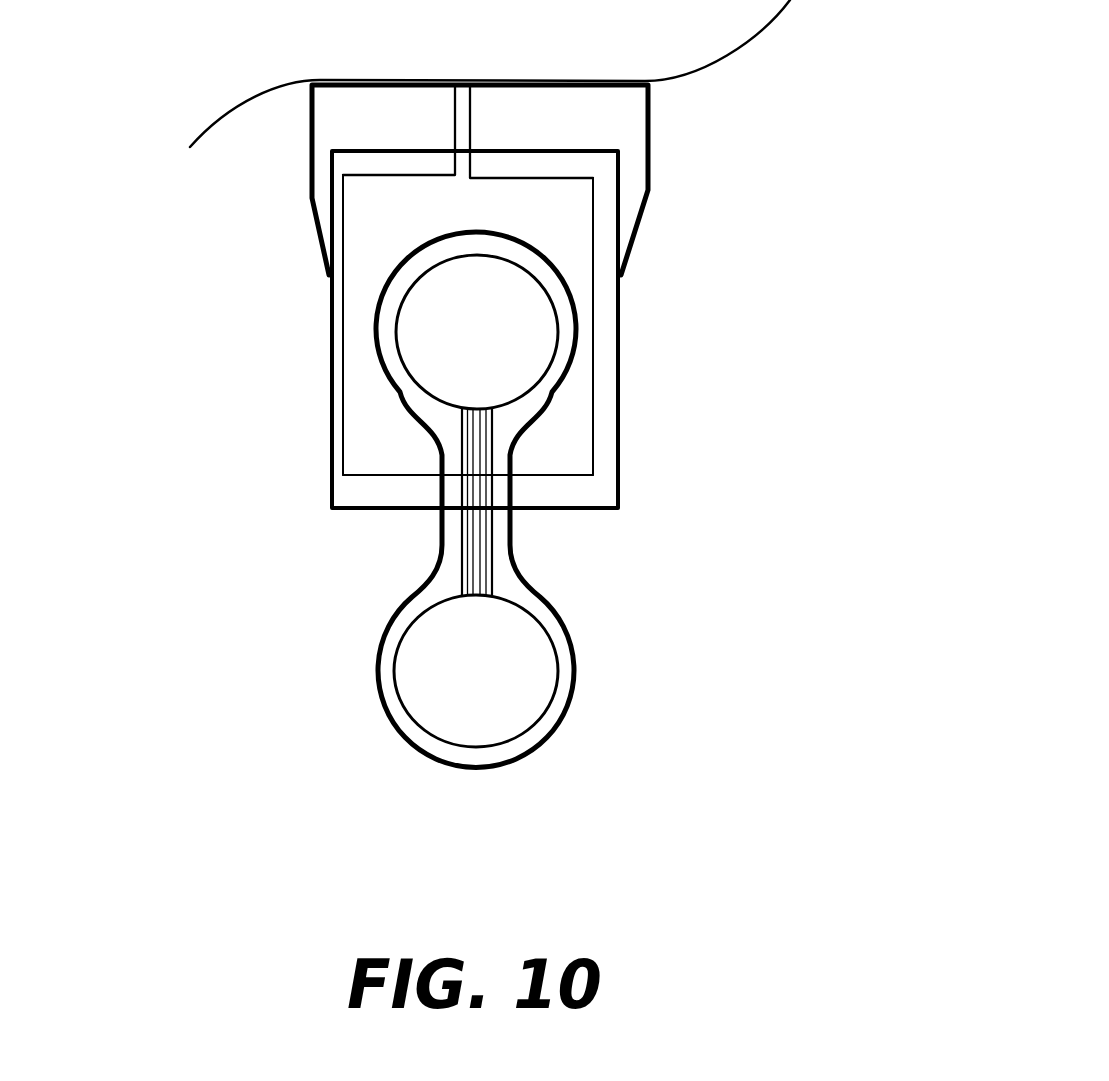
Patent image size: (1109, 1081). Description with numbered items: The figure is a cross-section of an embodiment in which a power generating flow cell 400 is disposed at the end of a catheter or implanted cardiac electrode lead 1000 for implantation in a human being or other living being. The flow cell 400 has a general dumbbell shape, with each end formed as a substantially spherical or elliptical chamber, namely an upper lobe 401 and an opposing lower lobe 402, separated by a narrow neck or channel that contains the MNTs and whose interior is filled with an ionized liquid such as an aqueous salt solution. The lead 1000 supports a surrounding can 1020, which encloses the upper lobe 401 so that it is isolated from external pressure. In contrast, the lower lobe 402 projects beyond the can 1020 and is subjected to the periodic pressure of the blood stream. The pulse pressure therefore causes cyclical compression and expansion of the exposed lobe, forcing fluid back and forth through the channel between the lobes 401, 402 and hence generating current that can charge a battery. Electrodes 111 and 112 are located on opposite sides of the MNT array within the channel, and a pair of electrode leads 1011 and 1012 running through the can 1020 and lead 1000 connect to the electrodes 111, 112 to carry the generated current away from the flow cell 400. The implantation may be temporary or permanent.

The cardiac electrode lead 1000 is at (648, 183).
The can 1020 is at (327, 332).
The electrode lead 1011 is at (333, 280).
The electrode lead 1012 is at (595, 280).
The flow cell 400 is at (334, 693).
The upper lobe 401 is at (513, 351).
The lower lobe 402 is at (511, 693).
The electrode 111 is at (447, 487).
The electrode 112 is at (513, 488).